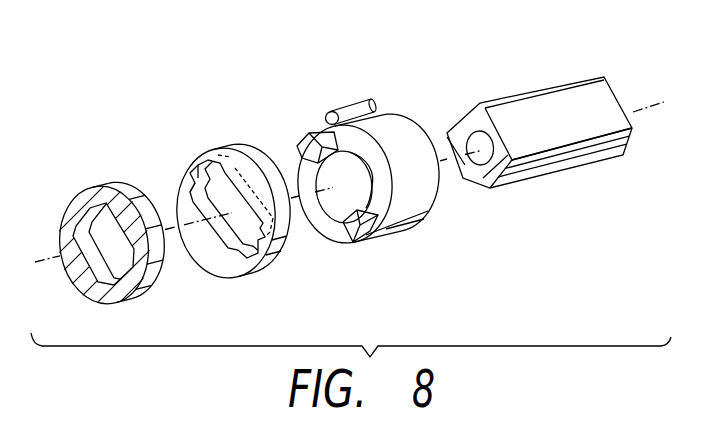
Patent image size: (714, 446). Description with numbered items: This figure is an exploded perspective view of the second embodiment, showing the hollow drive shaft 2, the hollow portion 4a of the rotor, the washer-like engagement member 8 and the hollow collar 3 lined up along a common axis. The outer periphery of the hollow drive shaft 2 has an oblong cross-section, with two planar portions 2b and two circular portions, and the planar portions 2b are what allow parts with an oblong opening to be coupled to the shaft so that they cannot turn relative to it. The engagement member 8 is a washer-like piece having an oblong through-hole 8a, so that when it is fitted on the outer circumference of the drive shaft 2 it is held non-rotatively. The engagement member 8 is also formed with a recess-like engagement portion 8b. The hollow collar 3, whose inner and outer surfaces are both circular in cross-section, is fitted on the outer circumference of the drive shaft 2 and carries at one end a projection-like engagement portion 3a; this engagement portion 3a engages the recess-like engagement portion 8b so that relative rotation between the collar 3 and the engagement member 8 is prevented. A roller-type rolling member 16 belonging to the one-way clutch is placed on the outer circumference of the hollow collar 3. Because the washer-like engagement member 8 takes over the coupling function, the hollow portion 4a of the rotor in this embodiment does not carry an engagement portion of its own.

The hollow drive shaft 2 is at (490, 95).
The planar portion 2b is at (527, 112).
The hollow collar 3 is at (388, 104).
The engagement portion 3a is at (303, 136).
The rolling member 16 is at (350, 104).
The engagement member 8 is at (229, 140).
The oblong through-hole 8a is at (183, 186).
The recess-like engagement portion 8b is at (198, 177).
The hollow portion 4a is at (103, 187).